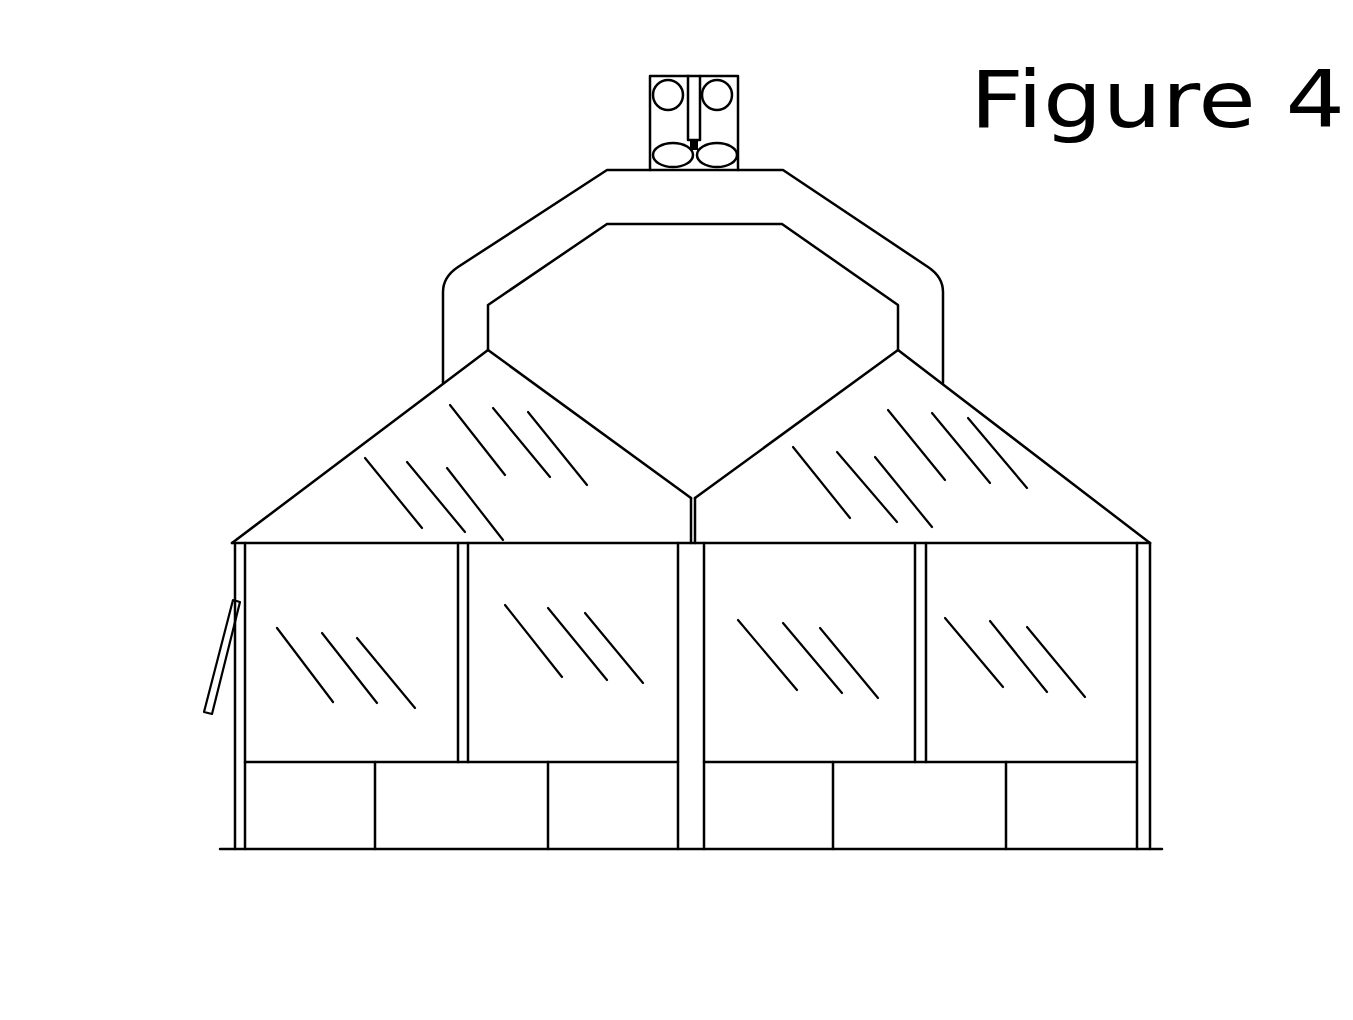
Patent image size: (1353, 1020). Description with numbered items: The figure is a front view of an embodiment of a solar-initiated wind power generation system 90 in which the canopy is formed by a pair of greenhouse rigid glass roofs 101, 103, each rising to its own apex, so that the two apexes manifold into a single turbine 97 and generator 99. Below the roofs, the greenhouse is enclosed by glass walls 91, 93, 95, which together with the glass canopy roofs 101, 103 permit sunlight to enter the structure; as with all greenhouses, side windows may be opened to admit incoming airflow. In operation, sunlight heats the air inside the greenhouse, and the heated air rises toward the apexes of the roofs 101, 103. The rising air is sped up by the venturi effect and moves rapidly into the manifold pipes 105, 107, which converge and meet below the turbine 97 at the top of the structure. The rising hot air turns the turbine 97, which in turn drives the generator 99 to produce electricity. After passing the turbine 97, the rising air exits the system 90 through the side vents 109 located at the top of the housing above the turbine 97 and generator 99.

The solar-initiated wind power generation system 90 is at (1165, 335).
The glass wall 91 is at (242, 708).
The glass wall 93 is at (687, 702).
The glass wall 95 is at (1140, 692).
The turbine 97 is at (717, 155).
The generator 99 is at (702, 107).
The greenhouse rigid glass roof 101 is at (393, 468).
The greenhouse rigid glass roof 103 is at (1020, 458).
The manifold pipe 105 is at (458, 312).
The manifold pipe 107 is at (912, 312).
The side vents 109 is at (663, 92).